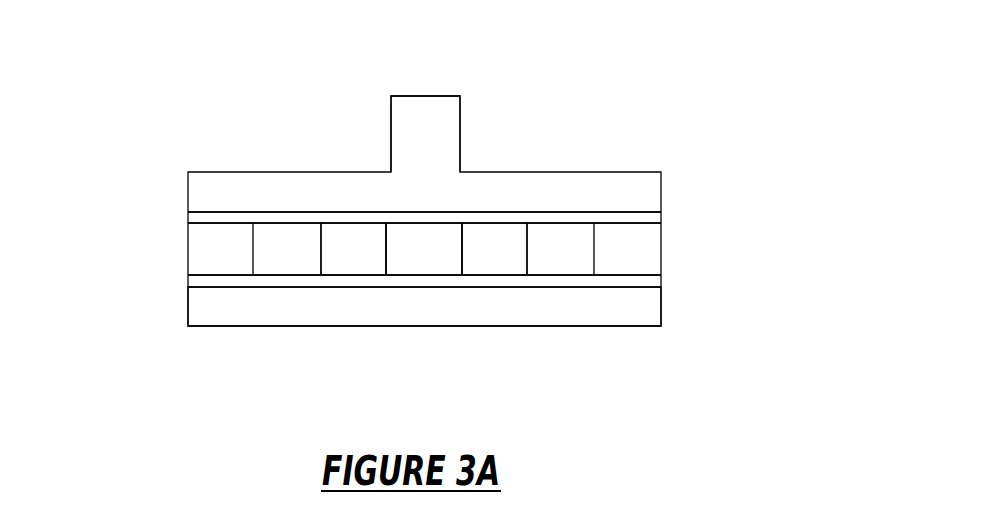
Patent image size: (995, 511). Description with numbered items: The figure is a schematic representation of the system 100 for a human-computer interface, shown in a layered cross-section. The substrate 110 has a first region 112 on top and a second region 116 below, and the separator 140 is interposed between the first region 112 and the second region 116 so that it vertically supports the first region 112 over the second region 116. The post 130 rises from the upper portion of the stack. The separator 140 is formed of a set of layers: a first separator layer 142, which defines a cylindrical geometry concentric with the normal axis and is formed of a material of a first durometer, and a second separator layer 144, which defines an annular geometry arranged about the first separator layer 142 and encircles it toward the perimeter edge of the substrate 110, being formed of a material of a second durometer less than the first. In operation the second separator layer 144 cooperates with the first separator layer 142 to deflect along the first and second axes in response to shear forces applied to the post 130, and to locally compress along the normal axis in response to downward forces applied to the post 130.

The system 100 is at (176, 98).
The substrate 110 is at (650, 218).
The first region 112 is at (198, 218).
The second region 116 is at (270, 288).
The post 130 is at (408, 142).
The separator 140 is at (187, 252).
The first separator layer 142 is at (415, 257).
The second separator layer 144 is at (348, 250).